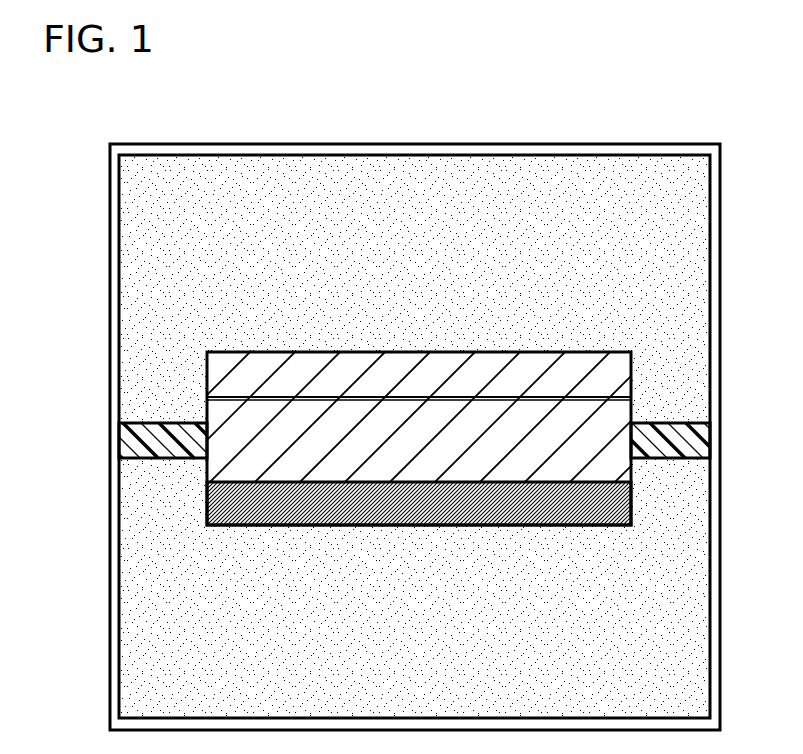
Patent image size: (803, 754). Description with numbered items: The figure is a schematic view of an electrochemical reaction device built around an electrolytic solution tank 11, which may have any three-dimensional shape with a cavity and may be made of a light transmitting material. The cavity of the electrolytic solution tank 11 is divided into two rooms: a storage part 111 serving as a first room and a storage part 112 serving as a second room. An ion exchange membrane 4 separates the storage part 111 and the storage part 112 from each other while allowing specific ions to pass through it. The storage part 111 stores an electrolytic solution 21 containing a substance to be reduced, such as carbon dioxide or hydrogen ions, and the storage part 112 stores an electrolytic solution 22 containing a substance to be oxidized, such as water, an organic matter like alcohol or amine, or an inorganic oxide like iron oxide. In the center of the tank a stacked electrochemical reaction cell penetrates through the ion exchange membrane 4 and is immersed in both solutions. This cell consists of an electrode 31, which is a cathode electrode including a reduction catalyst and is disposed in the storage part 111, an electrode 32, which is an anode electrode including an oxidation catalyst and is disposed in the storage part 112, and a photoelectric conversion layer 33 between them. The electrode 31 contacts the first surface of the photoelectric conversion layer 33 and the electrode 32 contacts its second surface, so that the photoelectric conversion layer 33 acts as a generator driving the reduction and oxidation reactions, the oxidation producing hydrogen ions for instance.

The electrolytic solution tank 11 is at (109, 170).
The storage part (first room) 111 is at (122, 613).
The storage part (second room) 112 is at (120, 383).
The electrolytic solution 21 is at (682, 635).
The electrolytic solution 22 is at (688, 222).
The electrode 31 is at (628, 503).
The electrode 32 is at (627, 371).
The photoelectric conversion layer 33 is at (665, 432).
The ion exchange membrane 4 is at (118, 437).